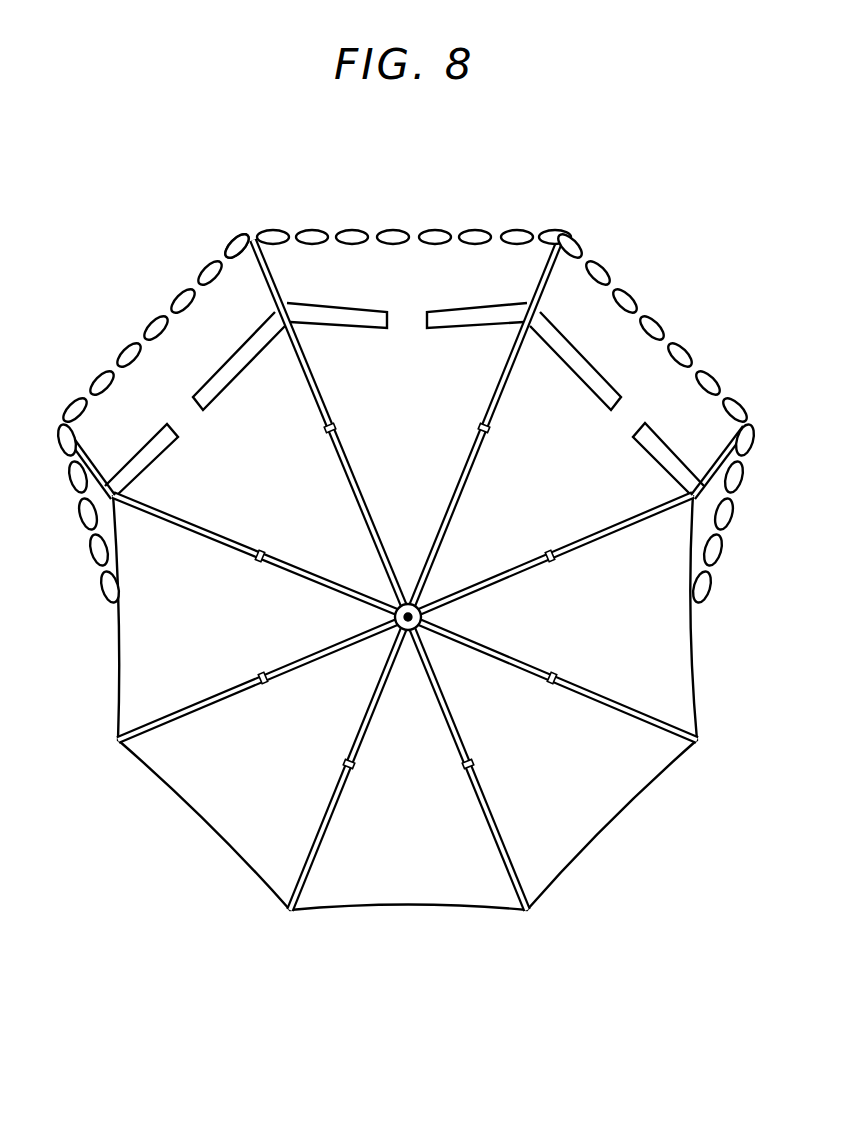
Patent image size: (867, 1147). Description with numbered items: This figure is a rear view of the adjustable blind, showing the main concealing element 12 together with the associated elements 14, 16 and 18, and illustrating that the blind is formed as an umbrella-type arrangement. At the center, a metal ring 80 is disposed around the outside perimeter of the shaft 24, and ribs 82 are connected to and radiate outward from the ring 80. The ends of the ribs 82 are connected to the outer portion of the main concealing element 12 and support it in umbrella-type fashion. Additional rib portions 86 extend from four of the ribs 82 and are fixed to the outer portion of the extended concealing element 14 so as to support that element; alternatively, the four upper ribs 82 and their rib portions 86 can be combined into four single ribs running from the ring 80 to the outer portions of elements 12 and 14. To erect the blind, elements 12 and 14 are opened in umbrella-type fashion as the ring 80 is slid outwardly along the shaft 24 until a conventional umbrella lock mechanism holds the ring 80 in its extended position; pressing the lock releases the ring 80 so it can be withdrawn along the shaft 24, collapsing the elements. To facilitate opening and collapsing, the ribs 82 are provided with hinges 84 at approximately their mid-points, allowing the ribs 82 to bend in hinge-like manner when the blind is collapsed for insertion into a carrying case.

The main concealing element 12 is at (420, 557).
The extended concealing element 14 is at (448, 256).
The associated element 16 is at (303, 303).
The associated element 18 is at (84, 500).
The shaft 24 is at (408, 630).
The metal ring 80 is at (426, 633).
The ribs 82 is at (556, 548).
The hinges 84 is at (554, 560).
The rib portions 86 is at (747, 437).